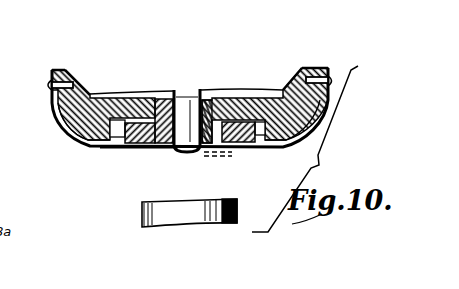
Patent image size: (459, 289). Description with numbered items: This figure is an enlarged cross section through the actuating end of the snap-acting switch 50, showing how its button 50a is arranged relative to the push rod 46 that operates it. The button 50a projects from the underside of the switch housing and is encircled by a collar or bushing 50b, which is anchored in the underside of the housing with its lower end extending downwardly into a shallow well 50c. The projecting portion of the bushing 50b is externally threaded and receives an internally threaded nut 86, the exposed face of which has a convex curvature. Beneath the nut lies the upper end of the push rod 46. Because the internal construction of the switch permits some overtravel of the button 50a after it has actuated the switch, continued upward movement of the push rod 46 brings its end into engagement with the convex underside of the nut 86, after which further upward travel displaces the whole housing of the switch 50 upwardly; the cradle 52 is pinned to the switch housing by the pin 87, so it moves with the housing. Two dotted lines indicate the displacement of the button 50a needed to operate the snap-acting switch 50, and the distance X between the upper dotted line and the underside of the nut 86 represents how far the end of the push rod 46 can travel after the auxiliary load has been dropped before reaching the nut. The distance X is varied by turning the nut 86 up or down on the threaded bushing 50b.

The snap-acting switch 50 is at (92, 70).
The button 50a is at (198, 87).
The collar or bushing 50b is at (168, 98).
The shallow well 50c is at (114, 138).
The cradle 52 is at (75, 140).
The nut 86 is at (156, 147).
The pin 87 is at (46, 80).
The push rod 46 is at (146, 213).
The distance X x is at (238, 148).